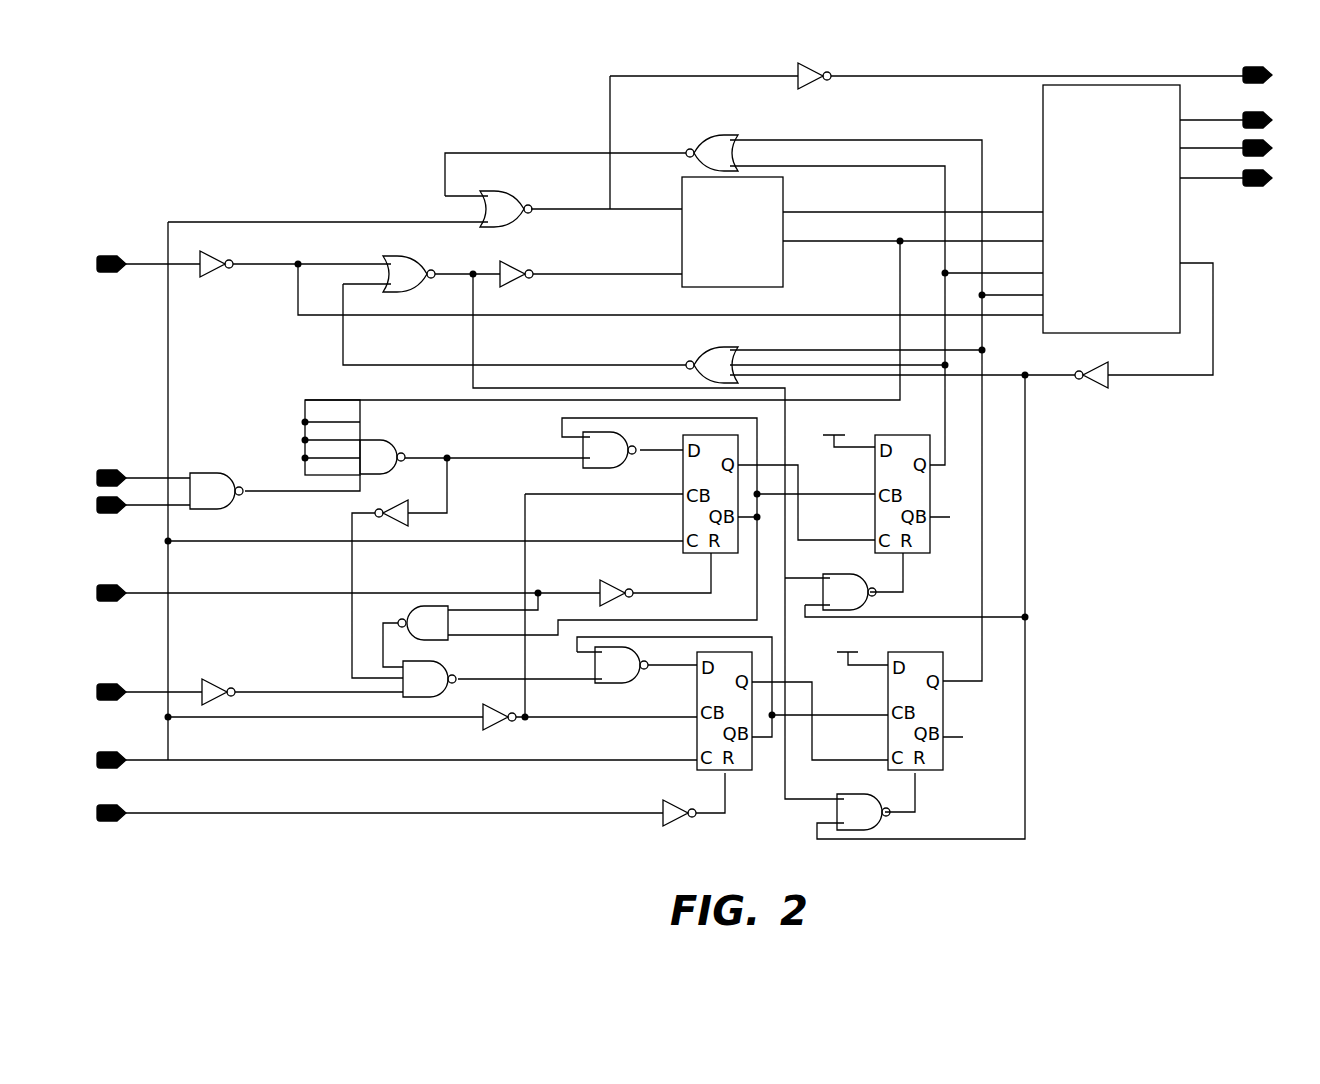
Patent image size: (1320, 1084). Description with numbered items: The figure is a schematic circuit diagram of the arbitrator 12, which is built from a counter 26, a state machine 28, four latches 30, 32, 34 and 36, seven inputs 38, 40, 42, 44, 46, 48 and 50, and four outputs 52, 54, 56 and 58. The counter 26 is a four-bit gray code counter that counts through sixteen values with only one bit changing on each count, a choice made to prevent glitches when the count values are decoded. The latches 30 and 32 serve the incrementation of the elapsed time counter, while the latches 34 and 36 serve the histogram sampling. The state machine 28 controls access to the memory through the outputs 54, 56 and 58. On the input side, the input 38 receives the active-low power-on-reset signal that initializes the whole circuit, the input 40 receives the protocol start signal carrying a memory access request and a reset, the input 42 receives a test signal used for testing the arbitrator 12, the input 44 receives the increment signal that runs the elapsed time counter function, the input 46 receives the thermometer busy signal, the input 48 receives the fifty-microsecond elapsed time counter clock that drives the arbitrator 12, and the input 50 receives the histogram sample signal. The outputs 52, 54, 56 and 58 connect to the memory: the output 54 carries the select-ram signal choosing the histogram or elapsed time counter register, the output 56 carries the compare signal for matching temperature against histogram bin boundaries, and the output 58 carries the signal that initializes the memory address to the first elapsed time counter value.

The arbitrator 12 is at (226, 146).
The counter 26 is at (783, 180).
The state machine 28 is at (1180, 220).
The latch 30 is at (683, 510).
The latch 32 is at (875, 510).
The latch 34 is at (697, 730).
The latch 36 is at (888, 730).
The input 38 is at (111, 255).
The input 40 is at (110, 471).
The input 42 is at (110, 513).
The input 44 is at (110, 586).
The input 46 is at (109, 685).
The input 48 is at (109, 753).
The input 50 is at (109, 806).
The output 52 is at (1253, 67).
The output 54 is at (1270, 116).
The output 56 is at (1270, 144).
The output 58 is at (1270, 173).